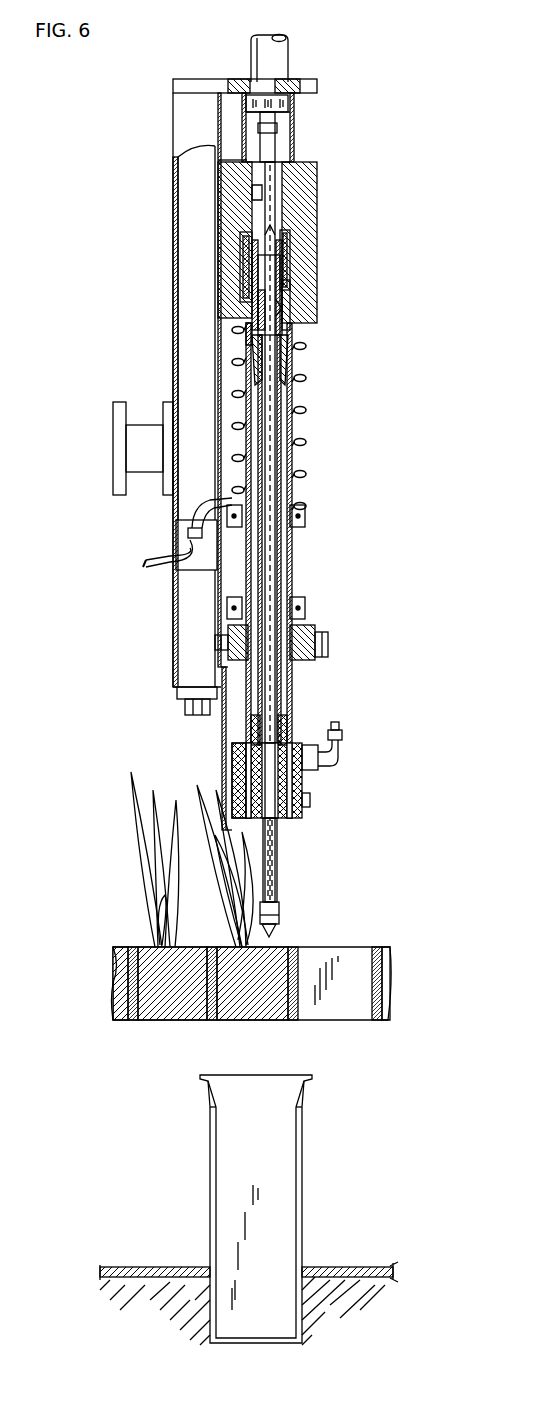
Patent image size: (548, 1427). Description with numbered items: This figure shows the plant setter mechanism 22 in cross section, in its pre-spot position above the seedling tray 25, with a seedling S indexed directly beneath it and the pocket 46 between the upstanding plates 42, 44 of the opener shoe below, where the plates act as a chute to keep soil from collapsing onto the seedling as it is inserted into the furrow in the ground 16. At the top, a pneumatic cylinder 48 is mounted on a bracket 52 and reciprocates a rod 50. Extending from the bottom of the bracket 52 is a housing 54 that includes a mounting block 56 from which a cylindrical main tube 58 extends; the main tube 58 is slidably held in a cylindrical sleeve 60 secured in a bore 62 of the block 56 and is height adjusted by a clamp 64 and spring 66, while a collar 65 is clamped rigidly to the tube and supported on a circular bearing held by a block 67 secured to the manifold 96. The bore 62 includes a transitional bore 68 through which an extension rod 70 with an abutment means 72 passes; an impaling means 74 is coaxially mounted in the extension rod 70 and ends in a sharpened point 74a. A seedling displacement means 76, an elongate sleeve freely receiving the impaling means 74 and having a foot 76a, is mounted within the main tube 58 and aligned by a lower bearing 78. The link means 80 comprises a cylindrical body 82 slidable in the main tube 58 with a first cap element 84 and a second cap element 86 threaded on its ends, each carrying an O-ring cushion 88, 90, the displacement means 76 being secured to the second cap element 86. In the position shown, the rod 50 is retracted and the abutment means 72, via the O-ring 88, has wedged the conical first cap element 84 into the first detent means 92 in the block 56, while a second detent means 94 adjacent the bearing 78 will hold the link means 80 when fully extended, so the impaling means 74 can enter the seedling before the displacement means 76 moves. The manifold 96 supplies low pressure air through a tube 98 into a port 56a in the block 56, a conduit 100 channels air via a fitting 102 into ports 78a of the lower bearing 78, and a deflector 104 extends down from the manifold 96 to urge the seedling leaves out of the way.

The ground surface 16 is at (142, 1267).
The plant setter mechanism 22 is at (310, 73).
The seedling tray 25 is at (125, 931).
The upstanding plate 42 is at (210, 1138).
The upstanding plate 44 is at (302, 1140).
The pocket 46 is at (248, 1220).
The pneumatic cylinder 48 is at (262, 50).
The rod 50 is at (272, 115).
The bracket 52 is at (200, 85).
The housing 54 is at (332, 250).
The mounting block 56 is at (300, 190).
The port 56a is at (234, 188).
The main tube 58 is at (293, 428).
The cylindrical sleeve 60 is at (302, 278).
The bore 62 is at (300, 303).
The clamp 64 is at (305, 518).
The collar 65 is at (305, 607).
The spring 66 is at (300, 441).
The block 67 is at (305, 665).
The transitional bore 68 is at (270, 188).
The extension rod 70 is at (265, 190).
The abutment means 72 is at (258, 286).
The impaling means 74 is at (270, 312).
The sharpened point 74a is at (278, 936).
The seedling displacement means 76 is at (282, 700).
The foot 76a is at (270, 935).
The lower bearing 78 is at (300, 795).
The ports 78a is at (255, 765).
The link means 80 is at (283, 312).
The cylindrical body 82 is at (258, 305).
The first cap element 84 is at (235, 242).
The second cap element 86 is at (250, 370).
The O-ring cushion 88 is at (258, 268).
The O-ring cushion 90 is at (250, 345).
The first detent means 92 is at (285, 214).
The second detent means 94 is at (287, 726).
The manifold 96 is at (178, 166).
The tube 98 is at (175, 562).
The conduit 100 is at (208, 522).
The fitting 102 is at (330, 765).
The deflector 104 is at (222, 727).
The seedling S is at (270, 1012).